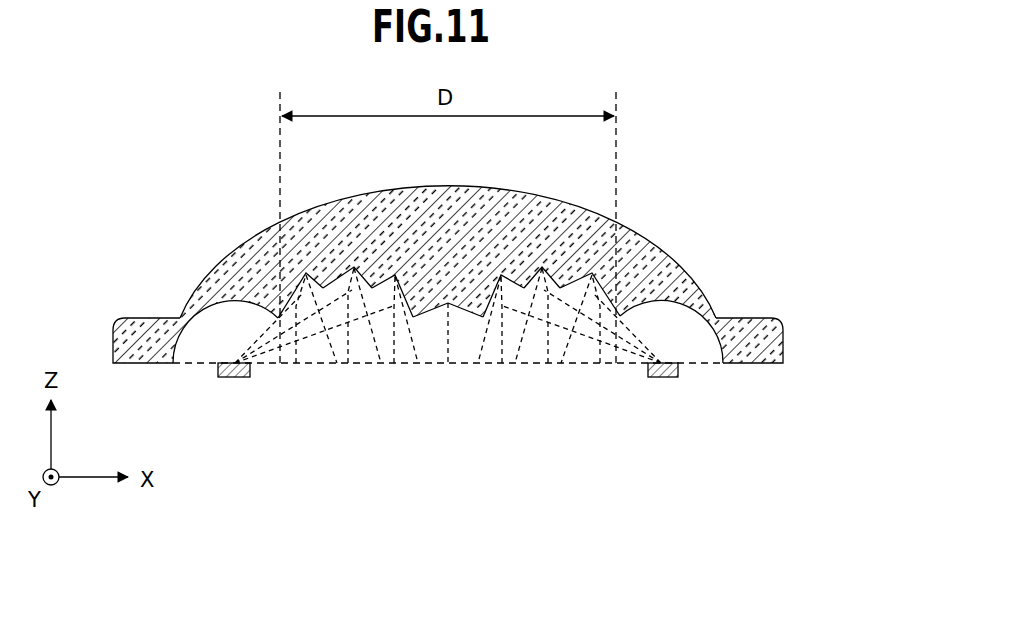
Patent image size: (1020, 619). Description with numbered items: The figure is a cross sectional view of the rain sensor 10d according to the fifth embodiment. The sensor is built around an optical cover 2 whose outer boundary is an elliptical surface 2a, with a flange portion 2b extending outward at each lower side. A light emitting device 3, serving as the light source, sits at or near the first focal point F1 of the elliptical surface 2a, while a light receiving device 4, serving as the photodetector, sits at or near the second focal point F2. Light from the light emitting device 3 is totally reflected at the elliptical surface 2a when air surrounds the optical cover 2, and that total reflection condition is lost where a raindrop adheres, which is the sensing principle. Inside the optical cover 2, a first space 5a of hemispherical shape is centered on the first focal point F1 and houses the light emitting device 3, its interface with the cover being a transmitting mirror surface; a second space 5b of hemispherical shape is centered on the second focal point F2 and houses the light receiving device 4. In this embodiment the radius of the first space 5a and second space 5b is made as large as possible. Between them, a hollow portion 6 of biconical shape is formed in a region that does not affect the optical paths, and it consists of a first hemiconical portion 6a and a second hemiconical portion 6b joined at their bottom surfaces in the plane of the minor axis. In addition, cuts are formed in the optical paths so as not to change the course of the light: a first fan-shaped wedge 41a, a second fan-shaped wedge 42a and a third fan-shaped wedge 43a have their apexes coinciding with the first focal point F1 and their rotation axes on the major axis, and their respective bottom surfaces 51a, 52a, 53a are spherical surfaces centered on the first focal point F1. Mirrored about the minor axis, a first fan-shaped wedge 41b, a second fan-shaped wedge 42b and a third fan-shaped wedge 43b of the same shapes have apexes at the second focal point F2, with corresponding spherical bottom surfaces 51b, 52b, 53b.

The rain sensor 10d is at (207, 167).
The optical cover 2 is at (667, 266).
The elliptical surface 2a is at (432, 189).
The flange portion 2b is at (750, 328).
The light emitting device 3 is at (228, 378).
The light receiving device 4 is at (668, 378).
The first space 5a is at (213, 348).
The second space 5b is at (683, 348).
The hollow portion 6 is at (450, 392).
The first hemiconical portion 6a is at (439, 348).
The second hemiconical portion 6b is at (463, 348).
The first fan-shaped wedge 41a is at (292, 307).
The second fan-shaped wedge 42a is at (343, 287).
The third fan-shaped wedge 43a is at (390, 287).
The first fan-shaped wedge 41b is at (606, 307).
The second fan-shaped wedge 42b is at (553, 287).
The third fan-shaped wedge 43b is at (506, 287).
The bottom surface 51a is at (305, 290).
The bottom surface 52a is at (353, 284).
The bottom surface 53a is at (410, 306).
The bottom surface 51b is at (593, 290).
The bottom surface 52b is at (543, 284).
The bottom surface 53b is at (486, 306).
The first focal point F1 is at (250, 366).
The second focal point F2 is at (648, 366).